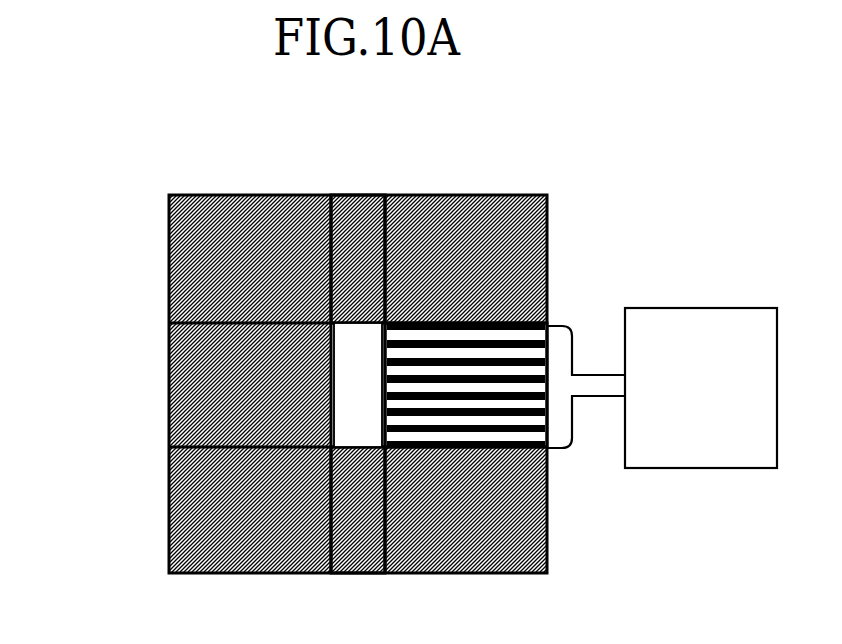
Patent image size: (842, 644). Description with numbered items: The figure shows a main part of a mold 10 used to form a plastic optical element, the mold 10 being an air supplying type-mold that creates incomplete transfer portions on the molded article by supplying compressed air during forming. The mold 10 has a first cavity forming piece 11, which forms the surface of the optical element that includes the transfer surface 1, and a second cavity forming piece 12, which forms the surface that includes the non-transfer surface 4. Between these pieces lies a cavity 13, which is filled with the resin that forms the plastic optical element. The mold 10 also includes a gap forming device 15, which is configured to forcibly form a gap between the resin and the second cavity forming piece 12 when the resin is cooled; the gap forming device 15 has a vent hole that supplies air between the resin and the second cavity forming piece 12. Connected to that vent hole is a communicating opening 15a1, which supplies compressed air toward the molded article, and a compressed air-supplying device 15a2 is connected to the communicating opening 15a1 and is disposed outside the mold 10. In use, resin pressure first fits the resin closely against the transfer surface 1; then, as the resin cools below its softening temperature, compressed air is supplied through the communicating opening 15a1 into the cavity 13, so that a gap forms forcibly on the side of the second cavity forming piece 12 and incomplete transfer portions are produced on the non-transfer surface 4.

The mold 10 is at (143, 184).
The first cavity forming piece 11 is at (362, 195).
The non-transfer surface 4 is at (380, 449).
The cavity 13 is at (352, 390).
The transfer surface 1 is at (358, 318).
The second cavity forming piece 12 is at (503, 321).
The gap forming device 15 is at (428, 317).
The communicating opening 15a1 is at (603, 387).
The compressed air-supplying device 15a2 is at (708, 308).